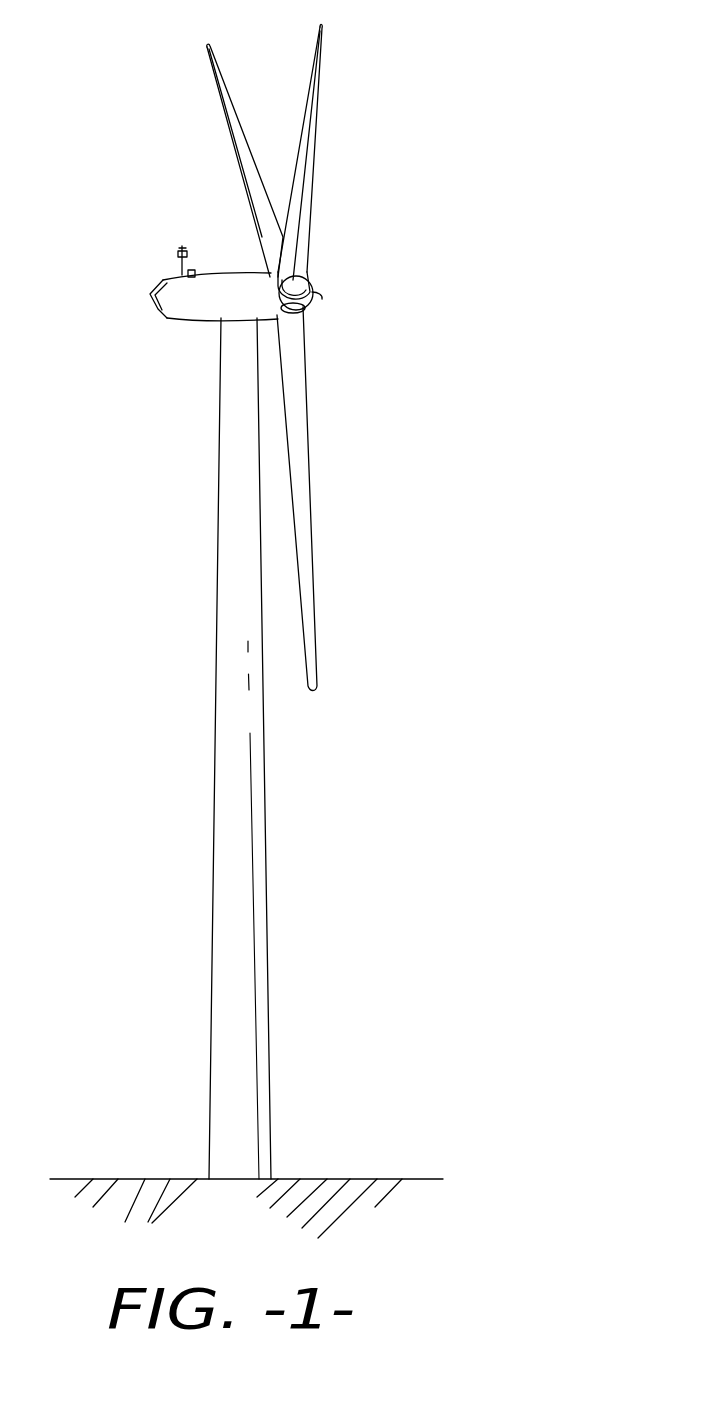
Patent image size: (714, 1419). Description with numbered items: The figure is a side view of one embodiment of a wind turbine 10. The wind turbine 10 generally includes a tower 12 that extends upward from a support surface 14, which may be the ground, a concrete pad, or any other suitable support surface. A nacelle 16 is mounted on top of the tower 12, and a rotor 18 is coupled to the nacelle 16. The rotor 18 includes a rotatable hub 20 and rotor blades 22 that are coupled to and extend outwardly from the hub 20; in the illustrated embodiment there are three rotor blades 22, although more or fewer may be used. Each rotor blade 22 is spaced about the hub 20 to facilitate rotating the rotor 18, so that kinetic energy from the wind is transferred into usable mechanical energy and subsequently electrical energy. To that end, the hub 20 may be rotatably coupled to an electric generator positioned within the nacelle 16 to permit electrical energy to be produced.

The wind turbine 10 is at (327, 601).
The tower 12 is at (227, 865).
The support surface 14 is at (135, 1178).
The nacelle 16 is at (193, 323).
The rotor 18 is at (297, 357).
The rotatable hub 20 is at (316, 292).
The rotor blade 22 is at (245, 173).